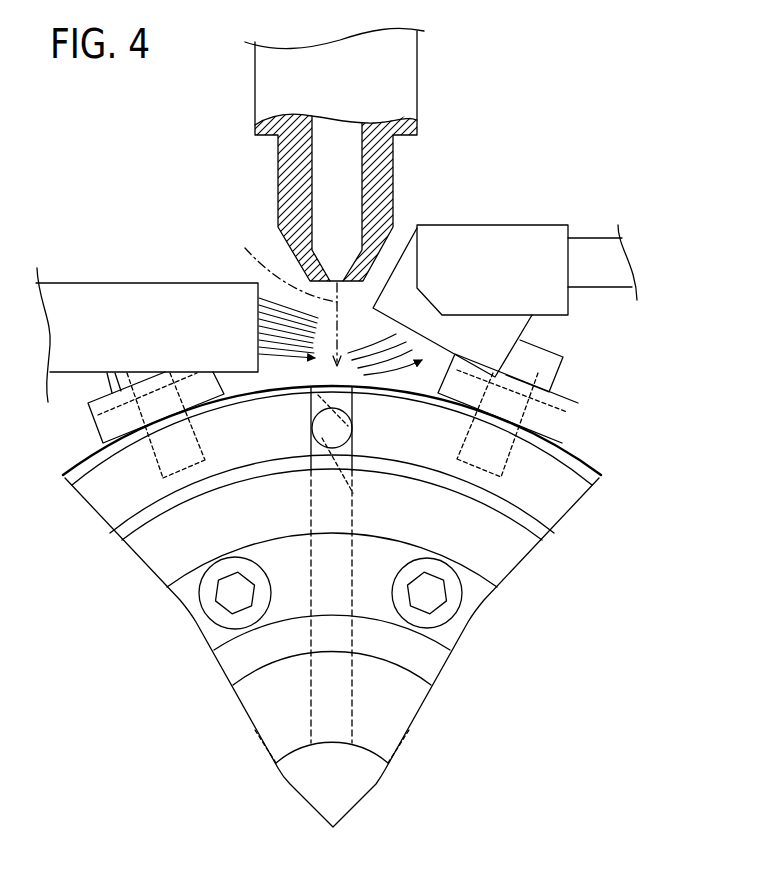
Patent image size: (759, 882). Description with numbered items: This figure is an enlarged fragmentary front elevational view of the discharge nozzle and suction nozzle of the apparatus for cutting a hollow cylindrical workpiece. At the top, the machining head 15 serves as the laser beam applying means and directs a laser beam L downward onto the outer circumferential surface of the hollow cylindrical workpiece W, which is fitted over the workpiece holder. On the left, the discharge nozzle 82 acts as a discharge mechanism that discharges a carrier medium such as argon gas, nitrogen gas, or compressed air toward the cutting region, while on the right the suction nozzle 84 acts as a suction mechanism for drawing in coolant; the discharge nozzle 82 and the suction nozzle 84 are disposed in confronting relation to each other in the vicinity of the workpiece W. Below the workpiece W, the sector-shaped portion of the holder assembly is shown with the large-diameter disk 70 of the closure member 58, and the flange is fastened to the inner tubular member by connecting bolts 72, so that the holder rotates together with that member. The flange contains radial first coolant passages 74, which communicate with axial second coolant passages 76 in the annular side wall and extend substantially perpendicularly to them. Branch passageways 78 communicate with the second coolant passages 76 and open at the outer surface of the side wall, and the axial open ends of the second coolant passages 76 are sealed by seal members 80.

The machining head 15 is at (383, 177).
The suction nozzle 84 is at (475, 236).
The discharge nozzle 82 is at (148, 297).
The seal member 80 is at (346, 424).
The branch passageway 78 is at (311, 423).
The first coolant passage 74 is at (310, 509).
The second coolant passage 76 is at (353, 493).
The connecting bolt 72 is at (462, 591).
The large-diameter disk 70 is at (332, 609).
The closure member 58 is at (375, 608).
The hollow cylindrical workpiece W is at (573, 453).
The laser beam L is at (284, 302).